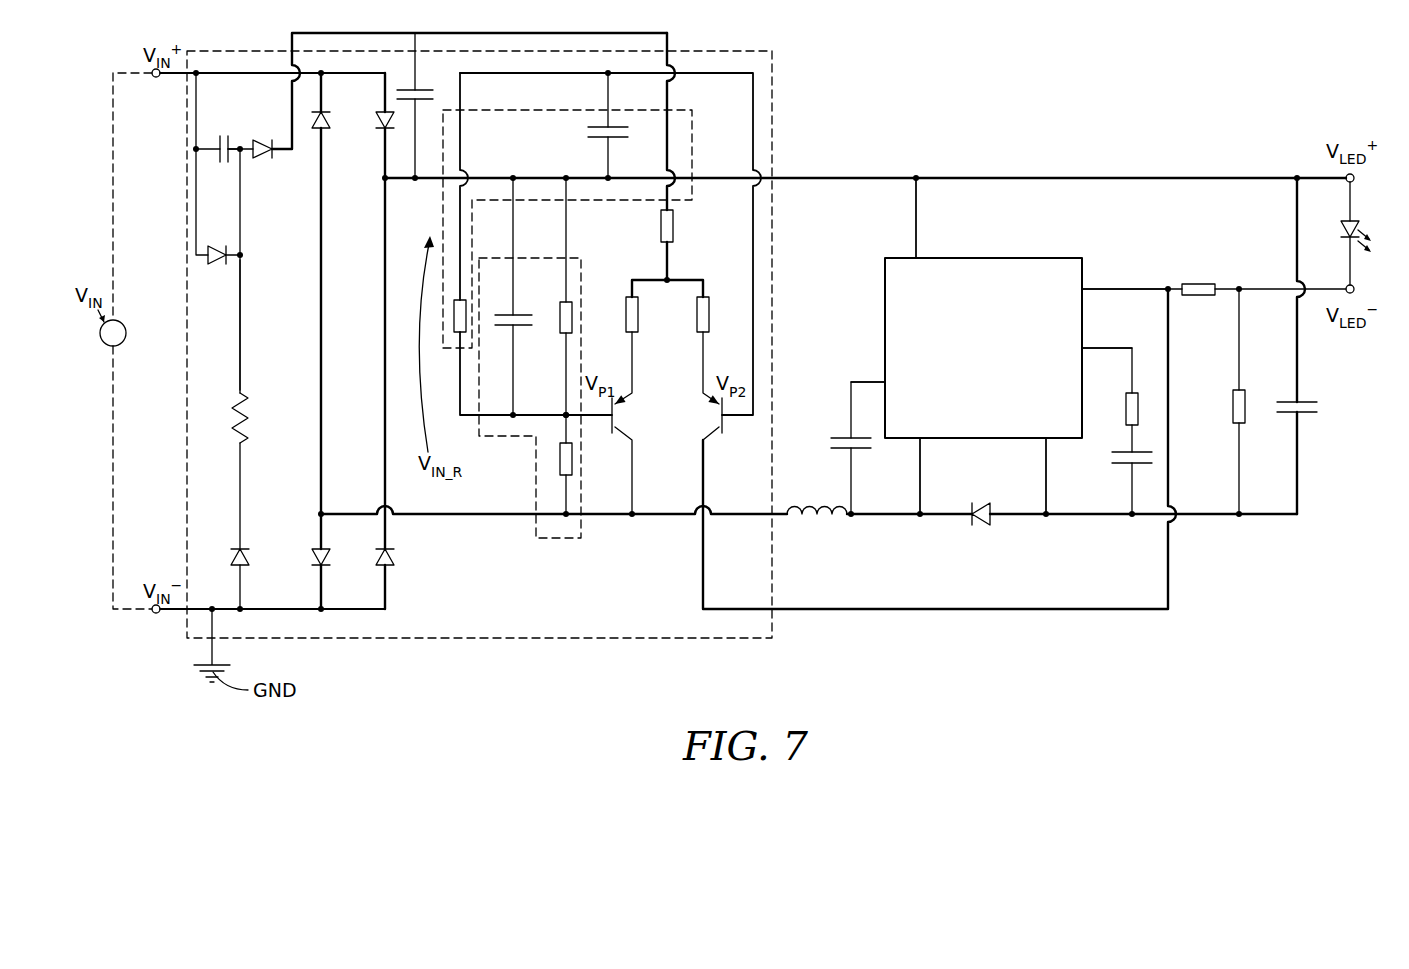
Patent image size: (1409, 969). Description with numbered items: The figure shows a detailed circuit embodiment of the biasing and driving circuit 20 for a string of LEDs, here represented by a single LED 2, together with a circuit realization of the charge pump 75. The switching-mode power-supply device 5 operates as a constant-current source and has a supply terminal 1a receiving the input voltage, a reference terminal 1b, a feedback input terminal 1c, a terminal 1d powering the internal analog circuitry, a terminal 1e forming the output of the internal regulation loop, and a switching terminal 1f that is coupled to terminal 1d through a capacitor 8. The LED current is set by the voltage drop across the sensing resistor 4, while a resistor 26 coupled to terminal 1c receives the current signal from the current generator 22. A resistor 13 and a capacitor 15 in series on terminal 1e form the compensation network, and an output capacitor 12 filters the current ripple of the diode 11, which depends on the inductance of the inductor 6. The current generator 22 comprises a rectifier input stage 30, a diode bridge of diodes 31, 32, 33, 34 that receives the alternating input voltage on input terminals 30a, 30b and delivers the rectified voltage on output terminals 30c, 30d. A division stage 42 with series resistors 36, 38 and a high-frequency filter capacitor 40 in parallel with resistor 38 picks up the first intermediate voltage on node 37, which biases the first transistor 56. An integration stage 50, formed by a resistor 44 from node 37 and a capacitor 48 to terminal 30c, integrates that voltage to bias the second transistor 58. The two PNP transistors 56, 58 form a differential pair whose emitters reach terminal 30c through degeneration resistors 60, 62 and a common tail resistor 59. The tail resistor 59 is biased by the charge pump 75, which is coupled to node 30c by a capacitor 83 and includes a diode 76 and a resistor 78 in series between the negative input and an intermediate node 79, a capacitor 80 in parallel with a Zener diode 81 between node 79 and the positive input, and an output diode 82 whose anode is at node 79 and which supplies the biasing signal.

The supply terminal 1a is at (914, 253).
The reference terminal 1b is at (1044, 448).
The feedback input terminal 1c is at (1086, 287).
The terminal 1d is at (882, 372).
The terminal 1e is at (1086, 346).
The terminal 1f is at (918, 448).
The LED 2 is at (1338, 222).
The sensing resistor 4 is at (1232, 390).
The SMPS device 5 is at (995, 272).
The inductor 6 is at (805, 506).
The capacitor 8 is at (840, 430).
The diode 11 is at (978, 527).
The output capacitor 12 is at (1305, 400).
The resistor 13 is at (1124, 410).
The capacitor 15 is at (1122, 466).
The biasing and driving circuit 20 is at (932, 100).
The current generator 22 is at (707, 50).
The resistor 26 is at (1200, 282).
The rectifier input stage 30 is at (303, 354).
The input terminal 30a is at (323, 73).
The input terminal 30b is at (323, 611).
The output terminal 30c is at (383, 181).
The output terminal 30d is at (323, 516).
The diode 31 is at (318, 130).
The diode 32 is at (376, 122).
The diode 33 is at (325, 565).
The diode 34 is at (389, 565).
The resistor 36 is at (573, 460).
The node 37 is at (562, 413).
The resistor 38 is at (573, 318).
The capacitor 40 is at (502, 312).
The division stage 42 is at (560, 540).
The resistor 44 is at (452, 312).
The capacitor 48 is at (596, 140).
The integration stage 50 is at (485, 110).
The first transistor 56 is at (616, 428).
The second transistor 58 is at (715, 432).
The tail resistor 59 is at (674, 228).
The degeneration resistor 60 is at (639, 318).
The degeneration resistor 62 is at (710, 318).
The charge pump 75 is at (222, 372).
The diode 76 is at (244, 565).
The resistor 78 is at (250, 430).
The intermediate node 79 is at (240, 146).
The capacitor 80 is at (218, 164).
The Zener diode 81 is at (216, 266).
The diode 82 is at (258, 160).
The capacitor 83 is at (420, 88).